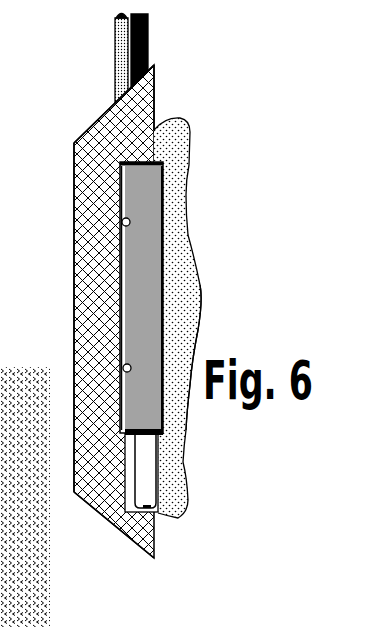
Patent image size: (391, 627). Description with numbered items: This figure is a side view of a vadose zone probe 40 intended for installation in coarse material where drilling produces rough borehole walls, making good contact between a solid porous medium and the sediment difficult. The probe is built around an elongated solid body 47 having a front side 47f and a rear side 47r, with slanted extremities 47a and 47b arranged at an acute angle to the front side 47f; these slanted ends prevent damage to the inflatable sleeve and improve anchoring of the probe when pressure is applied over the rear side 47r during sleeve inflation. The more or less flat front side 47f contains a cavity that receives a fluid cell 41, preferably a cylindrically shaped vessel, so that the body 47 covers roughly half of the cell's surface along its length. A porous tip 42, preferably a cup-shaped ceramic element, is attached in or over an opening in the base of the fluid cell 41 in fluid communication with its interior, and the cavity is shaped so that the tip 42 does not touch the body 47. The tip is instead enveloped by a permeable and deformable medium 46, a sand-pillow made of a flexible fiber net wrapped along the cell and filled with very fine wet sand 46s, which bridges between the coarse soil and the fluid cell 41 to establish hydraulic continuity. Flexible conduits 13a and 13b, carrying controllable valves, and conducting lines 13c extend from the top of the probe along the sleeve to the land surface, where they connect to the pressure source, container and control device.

The flexible conduit 13a is at (148, 61).
The flexible conduit 13b is at (139, 5).
The conducting lines 13c is at (115, 83).
The vadose zone probe 40 is at (247, 153).
The fluid cell 41 is at (160, 300).
The porous tip 42 is at (157, 472).
The permeable and deformable medium 46 is at (182, 190).
The fine wet sand 46s is at (183, 331).
The elongated solid body 47 is at (74, 267).
The slanted extremity 47a is at (102, 115).
The slanted extremity 47b is at (123, 527).
The rear side 47r is at (74, 193).
The front side 47f is at (154, 103).